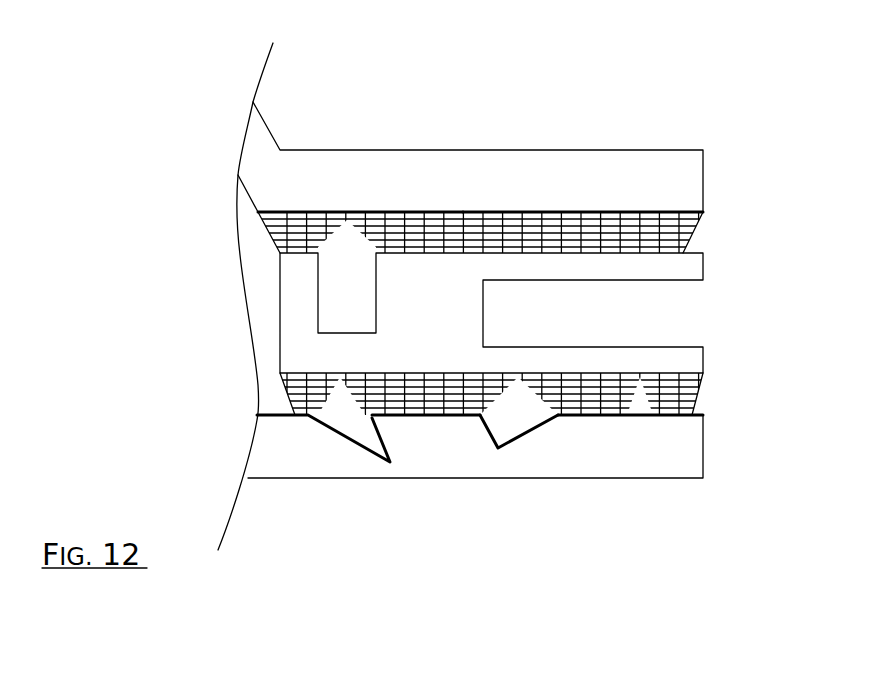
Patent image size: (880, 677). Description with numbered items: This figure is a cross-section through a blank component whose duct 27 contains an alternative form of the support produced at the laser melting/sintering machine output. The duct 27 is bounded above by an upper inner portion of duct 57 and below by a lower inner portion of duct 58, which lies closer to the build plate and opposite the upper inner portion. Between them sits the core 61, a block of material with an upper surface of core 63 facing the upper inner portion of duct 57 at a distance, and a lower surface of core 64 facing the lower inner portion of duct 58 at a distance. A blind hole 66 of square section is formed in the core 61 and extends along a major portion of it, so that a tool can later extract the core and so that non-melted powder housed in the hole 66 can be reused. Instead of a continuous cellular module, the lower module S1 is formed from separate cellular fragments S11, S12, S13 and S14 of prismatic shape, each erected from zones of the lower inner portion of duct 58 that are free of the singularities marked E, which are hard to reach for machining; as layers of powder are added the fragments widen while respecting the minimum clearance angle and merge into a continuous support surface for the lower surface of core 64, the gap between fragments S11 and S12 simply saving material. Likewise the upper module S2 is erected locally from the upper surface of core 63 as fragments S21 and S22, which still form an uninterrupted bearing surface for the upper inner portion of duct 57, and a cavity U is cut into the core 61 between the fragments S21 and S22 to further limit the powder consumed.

The duct 27 is at (729, 101).
The upper inner portion of duct 57 is at (690, 238).
The lower inner portion of duct 58 is at (273, 415).
The core 61 is at (430, 294).
The upper surface of core 63 is at (688, 243).
The lower surface of core 64 is at (697, 390).
The blind hole 66 is at (578, 319).
The cavity U is at (346, 294).
The singularities E is at (498, 420).
The lower module S1 is at (268, 562).
The cellular fragment S11 is at (693, 400).
The cellular fragment S12 is at (593, 400).
The cellular fragment S13 is at (433, 403).
The cellular fragment S14 is at (293, 397).
The upper module S2 is at (372, 58).
The fragment S21 is at (600, 213).
The fragment S22 is at (325, 217).